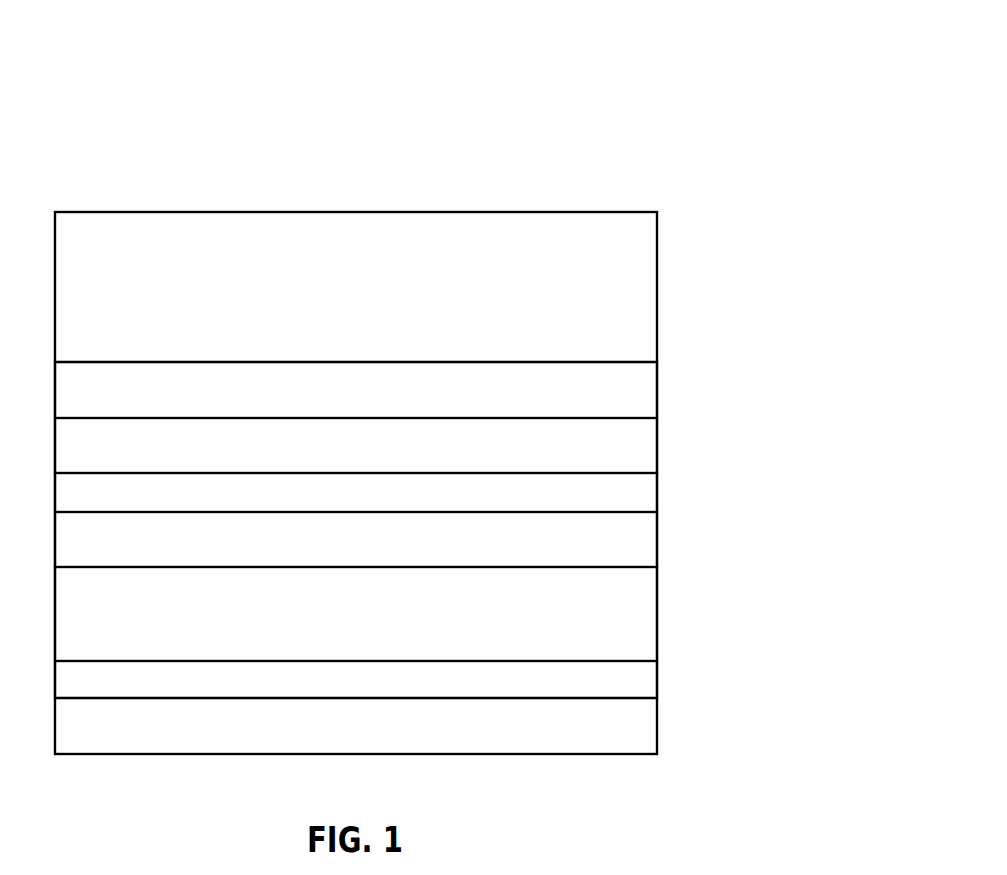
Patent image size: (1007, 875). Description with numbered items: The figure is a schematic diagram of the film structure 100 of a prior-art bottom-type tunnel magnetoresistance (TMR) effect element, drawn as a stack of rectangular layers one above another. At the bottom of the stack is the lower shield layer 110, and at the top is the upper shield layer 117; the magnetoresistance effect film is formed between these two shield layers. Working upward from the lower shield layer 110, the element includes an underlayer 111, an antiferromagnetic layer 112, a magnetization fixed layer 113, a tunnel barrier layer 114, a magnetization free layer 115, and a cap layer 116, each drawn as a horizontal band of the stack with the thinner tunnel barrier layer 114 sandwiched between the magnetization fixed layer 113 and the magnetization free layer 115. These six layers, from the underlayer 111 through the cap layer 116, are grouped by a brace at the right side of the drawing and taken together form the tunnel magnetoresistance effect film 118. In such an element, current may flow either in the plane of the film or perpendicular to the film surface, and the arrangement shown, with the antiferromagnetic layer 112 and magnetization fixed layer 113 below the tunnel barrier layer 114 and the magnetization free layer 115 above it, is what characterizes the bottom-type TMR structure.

The film structure 100 is at (572, 136).
The lower shield layer 110 is at (356, 726).
The underlayer 111 is at (356, 679).
The antiferromagnetic layer 112 is at (356, 614).
The magnetization fixed layer 113 is at (356, 539).
The tunnel barrier layer 114 is at (356, 492).
The magnetization free layer 115 is at (356, 445).
The cap layer 116 is at (356, 390).
The upper shield layer 117 is at (356, 287).
The tunnel magnetoresistance effect film 118 is at (673, 361).